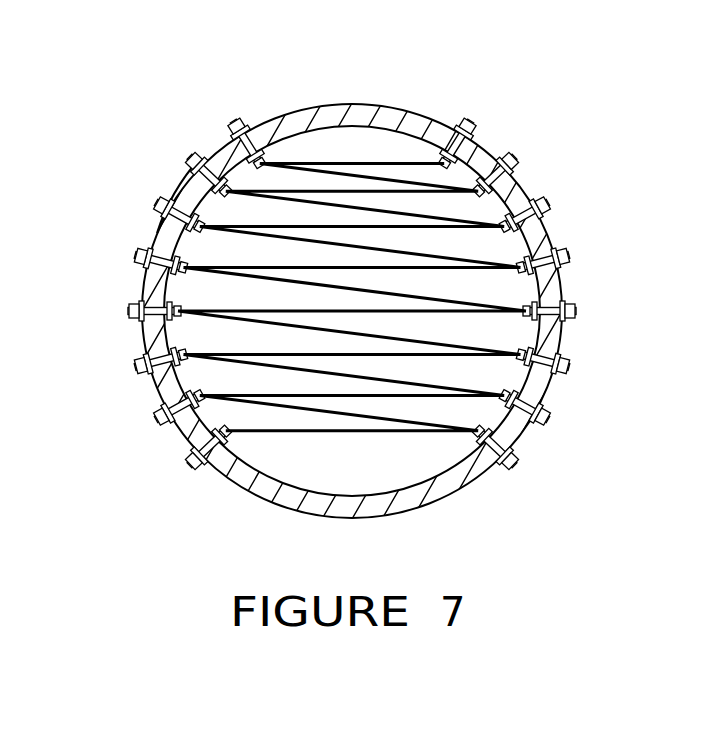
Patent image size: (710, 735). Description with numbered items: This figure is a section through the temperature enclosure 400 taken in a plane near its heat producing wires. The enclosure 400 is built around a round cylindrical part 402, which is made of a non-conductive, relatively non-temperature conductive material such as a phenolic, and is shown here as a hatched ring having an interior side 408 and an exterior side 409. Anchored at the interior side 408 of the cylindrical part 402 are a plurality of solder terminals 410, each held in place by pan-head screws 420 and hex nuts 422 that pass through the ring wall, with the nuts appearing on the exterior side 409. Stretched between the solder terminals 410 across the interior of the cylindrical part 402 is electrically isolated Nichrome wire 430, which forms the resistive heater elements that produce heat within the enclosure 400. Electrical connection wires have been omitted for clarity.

The temperature enclosure 400 is at (150, 234).
The round cylindrical part 402 is at (548, 237).
The interior side 408 is at (427, 476).
The exterior side 409 is at (178, 185).
The solder terminals 410 is at (275, 166).
The pan-head screws 420 is at (208, 160).
The hex nuts 422 is at (250, 125).
The Nichrome 60 wire 430 is at (283, 436).